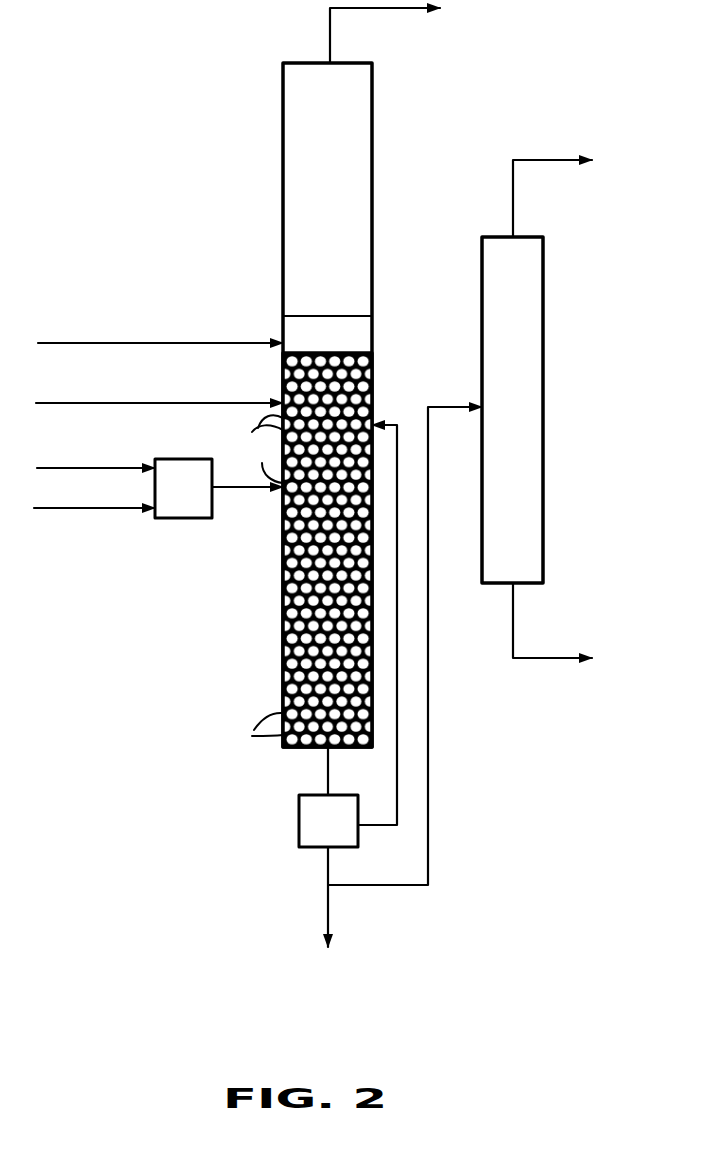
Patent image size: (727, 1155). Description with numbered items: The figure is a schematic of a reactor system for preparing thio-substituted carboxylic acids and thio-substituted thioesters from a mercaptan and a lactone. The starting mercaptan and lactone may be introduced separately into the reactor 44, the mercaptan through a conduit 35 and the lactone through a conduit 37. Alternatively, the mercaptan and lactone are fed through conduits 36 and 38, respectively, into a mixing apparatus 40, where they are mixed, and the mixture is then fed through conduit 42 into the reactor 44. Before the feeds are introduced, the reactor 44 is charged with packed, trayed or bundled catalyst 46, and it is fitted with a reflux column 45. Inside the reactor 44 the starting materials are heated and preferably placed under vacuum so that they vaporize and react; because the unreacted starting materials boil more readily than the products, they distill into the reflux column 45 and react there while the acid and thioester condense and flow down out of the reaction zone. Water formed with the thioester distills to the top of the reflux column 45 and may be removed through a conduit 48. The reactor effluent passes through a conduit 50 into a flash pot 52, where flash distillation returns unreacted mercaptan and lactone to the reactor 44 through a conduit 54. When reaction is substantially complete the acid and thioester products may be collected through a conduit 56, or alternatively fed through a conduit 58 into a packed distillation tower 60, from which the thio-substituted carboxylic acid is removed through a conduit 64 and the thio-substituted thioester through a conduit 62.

The conduit 35 is at (190, 343).
The conduit 36 is at (112, 468).
The conduit 37 is at (165, 403).
The conduit 38 is at (56, 508).
The mixing apparatus 40 is at (196, 518).
The conduit 42 is at (226, 487).
The reactor 44 is at (283, 567).
The reflux column 45 is at (283, 178).
The catalyst 46 is at (251, 583).
The conduit 48 is at (330, 36).
The conduit 50 is at (328, 780).
The flash pot 52 is at (299, 835).
The conduit 54 is at (398, 430).
The conduit 56 is at (328, 868).
The conduit 58 is at (428, 745).
The distillation tower 60 is at (543, 485).
The conduit 62 is at (513, 198).
The conduit 64 is at (513, 620).